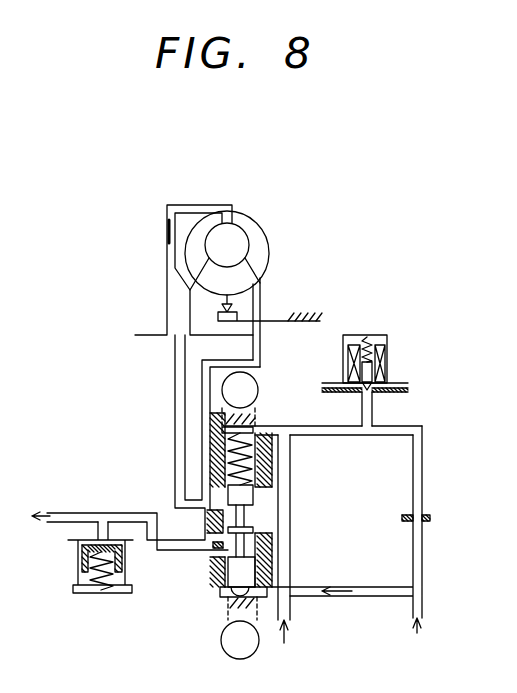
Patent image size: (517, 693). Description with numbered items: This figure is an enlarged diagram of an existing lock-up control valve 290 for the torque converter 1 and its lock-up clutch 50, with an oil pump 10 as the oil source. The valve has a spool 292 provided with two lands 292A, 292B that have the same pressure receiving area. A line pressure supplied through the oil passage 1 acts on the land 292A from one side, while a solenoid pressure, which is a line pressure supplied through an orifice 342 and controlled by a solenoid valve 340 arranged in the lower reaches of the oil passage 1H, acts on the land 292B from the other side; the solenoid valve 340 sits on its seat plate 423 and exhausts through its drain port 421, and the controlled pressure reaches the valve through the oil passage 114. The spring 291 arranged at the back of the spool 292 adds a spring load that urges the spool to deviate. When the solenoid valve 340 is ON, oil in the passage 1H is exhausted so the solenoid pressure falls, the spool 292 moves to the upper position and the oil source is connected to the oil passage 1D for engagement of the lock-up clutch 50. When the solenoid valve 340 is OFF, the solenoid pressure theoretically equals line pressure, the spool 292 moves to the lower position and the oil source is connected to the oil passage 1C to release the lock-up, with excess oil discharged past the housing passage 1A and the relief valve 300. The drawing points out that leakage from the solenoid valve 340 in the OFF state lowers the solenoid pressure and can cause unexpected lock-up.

The oil pump 10 is at (268, 248).
The lock-up clutch 50 is at (167, 228).
The oil passage 1C is at (178, 363).
The oil passage 1D is at (200, 410).
The oil passage 1H is at (287, 426).
The relief valve 300 is at (108, 592).
The pressure regulator valve 290 is at (244, 599).
The spring 291 is at (255, 445).
The spool 292 is at (262, 505).
The land 292A is at (232, 576).
The land 292B is at (232, 493).
The oil passage 114 is at (390, 436).
The housing passage 1A is at (290, 547).
The oil passage 1 is at (423, 598).
The orifice 342 is at (415, 512).
The solenoid valve 340 is at (368, 334).
The valve seat plate 423 is at (395, 382).
The drain port 421 is at (370, 395).